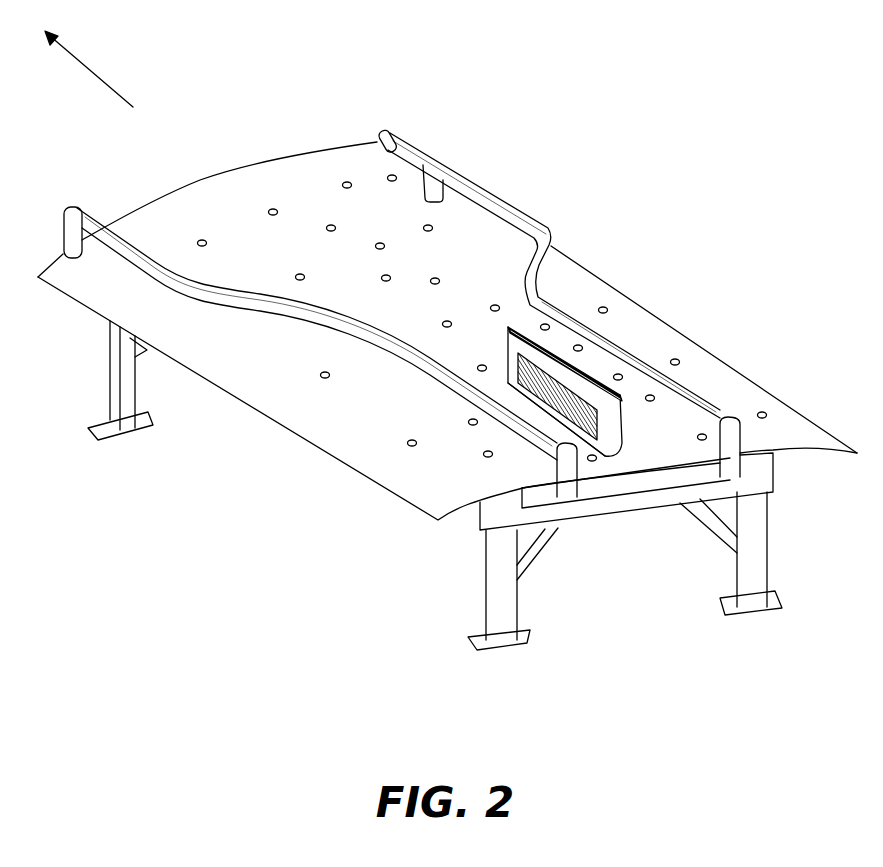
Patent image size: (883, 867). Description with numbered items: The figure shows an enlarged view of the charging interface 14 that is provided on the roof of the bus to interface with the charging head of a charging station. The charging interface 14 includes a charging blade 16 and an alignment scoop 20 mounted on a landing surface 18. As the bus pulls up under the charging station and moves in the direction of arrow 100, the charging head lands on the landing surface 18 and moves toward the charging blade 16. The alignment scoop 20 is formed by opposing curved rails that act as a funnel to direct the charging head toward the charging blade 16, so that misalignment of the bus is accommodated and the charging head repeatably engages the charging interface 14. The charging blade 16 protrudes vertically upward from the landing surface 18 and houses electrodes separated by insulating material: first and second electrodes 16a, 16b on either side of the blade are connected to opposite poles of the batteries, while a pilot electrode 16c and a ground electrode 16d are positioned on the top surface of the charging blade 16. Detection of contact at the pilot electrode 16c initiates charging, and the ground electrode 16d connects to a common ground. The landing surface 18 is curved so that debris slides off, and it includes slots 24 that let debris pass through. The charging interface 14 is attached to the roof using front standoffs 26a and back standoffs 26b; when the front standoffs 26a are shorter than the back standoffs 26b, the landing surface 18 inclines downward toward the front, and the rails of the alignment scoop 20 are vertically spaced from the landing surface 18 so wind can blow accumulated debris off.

The direction of bus movement 100 is at (140, 73).
The charging interface 14 is at (562, 193).
The alignment scoop 20 is at (430, 357).
The landing surface 18 is at (356, 269).
The slots 24 is at (483, 455).
The charging blade 16 is at (664, 355).
The first electrode 16a is at (610, 463).
The second electrode 16b is at (612, 462).
The pilot electrode 16c is at (583, 378).
The ground electrode 16d is at (552, 355).
The front standoffs 26a is at (108, 378).
The back standoffs 26b is at (487, 582).